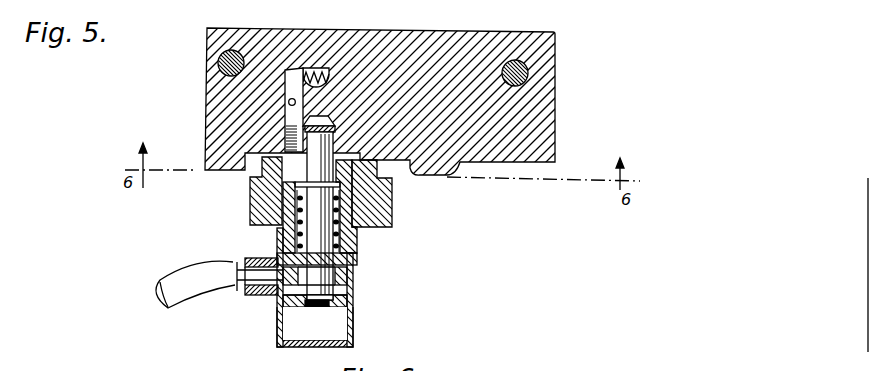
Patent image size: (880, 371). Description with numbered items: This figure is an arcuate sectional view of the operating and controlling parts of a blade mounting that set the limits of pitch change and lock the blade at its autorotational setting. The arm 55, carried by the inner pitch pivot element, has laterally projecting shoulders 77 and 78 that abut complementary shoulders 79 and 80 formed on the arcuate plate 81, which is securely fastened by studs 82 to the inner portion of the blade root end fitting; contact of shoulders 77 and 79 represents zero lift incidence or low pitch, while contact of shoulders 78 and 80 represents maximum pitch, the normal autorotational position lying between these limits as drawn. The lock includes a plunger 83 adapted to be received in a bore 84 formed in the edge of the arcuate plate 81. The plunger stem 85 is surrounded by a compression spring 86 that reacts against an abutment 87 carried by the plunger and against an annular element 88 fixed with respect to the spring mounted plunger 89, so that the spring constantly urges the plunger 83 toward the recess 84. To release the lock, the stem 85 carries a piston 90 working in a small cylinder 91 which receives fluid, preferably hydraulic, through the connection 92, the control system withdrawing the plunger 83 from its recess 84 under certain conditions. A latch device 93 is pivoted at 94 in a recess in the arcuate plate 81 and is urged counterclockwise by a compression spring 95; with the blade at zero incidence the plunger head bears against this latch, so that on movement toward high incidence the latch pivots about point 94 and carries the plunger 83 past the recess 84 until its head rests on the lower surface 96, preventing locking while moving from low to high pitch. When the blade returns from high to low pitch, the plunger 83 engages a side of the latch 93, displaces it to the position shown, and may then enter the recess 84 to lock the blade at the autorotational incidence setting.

The arm 55 is at (358, 231).
The shoulder 77 is at (312, 170).
The shoulder 78 is at (393, 183).
The complementary shoulder 79 is at (257, 170).
The complementary shoulder 80 is at (414, 172).
The arcuate plate 81 is at (417, 40).
The studs 82 is at (222, 61).
The plunger 83 is at (267, 187).
The bore 84 is at (335, 116).
The plunger stem 85 is at (280, 314).
The compression spring 86 is at (357, 256).
The abutment 87 is at (288, 228).
The annular element 88 is at (357, 246).
The spring mounted plunger 89 is at (350, 243).
The piston 90 is at (338, 307).
The cylinder 91 is at (278, 342).
The connection 92 is at (192, 298).
The latch device 93 is at (291, 115).
The pivot 94 is at (288, 101).
The compression spring 95 is at (313, 72).
The lower surface 96 is at (360, 196).